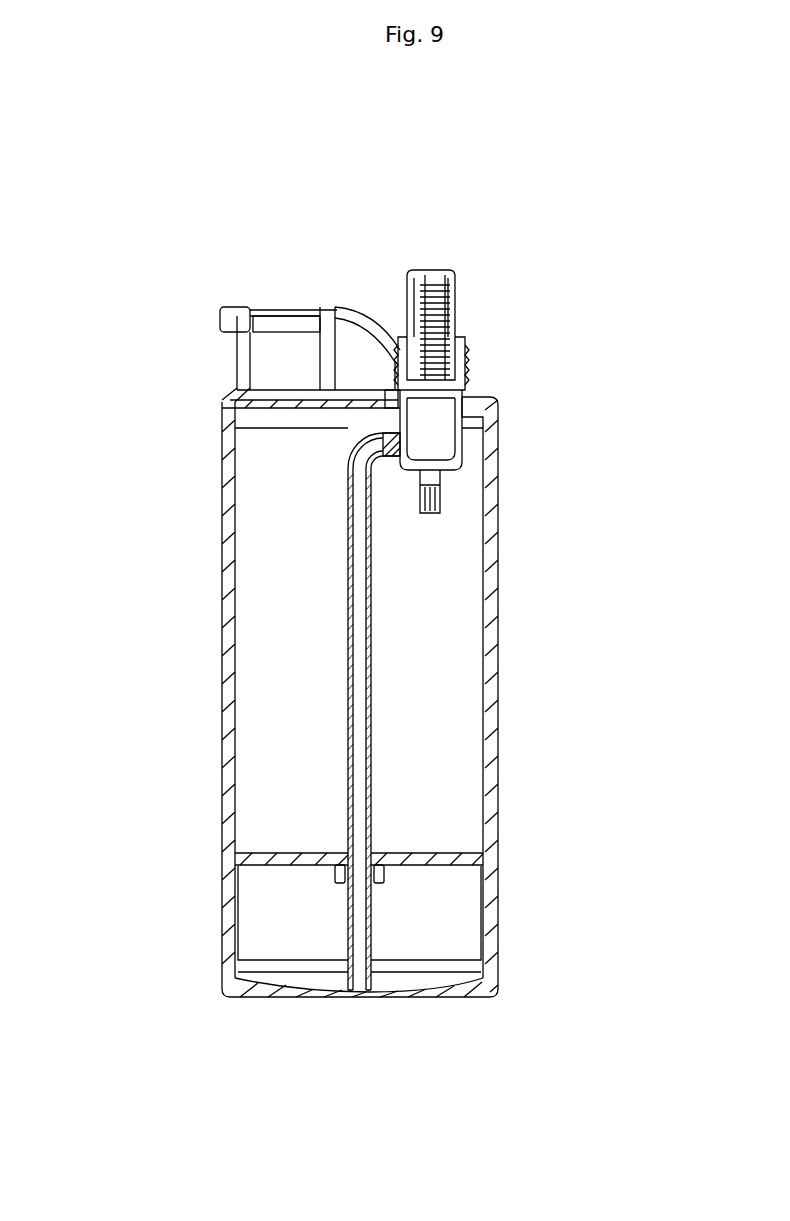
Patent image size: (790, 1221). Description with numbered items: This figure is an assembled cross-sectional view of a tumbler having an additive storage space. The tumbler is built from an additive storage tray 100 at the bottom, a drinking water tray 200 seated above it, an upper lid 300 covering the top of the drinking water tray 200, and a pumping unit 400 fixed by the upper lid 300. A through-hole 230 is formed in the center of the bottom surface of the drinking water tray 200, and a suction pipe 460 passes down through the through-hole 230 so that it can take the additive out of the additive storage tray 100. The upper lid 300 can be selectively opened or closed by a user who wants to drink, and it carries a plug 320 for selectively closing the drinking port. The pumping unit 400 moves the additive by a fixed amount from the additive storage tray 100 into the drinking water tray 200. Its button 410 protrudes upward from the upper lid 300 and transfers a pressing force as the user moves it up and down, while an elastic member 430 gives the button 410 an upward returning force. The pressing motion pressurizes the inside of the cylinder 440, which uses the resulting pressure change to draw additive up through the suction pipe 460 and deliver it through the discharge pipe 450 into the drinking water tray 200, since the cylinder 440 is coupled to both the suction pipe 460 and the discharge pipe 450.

The additive storage tray 100 is at (497, 972).
The drinking water tray 200 is at (490, 548).
The through-hole 230 is at (375, 852).
The upper lid 300 is at (222, 362).
The plug 320 is at (340, 305).
The pumping unit 400 is at (474, 282).
The button 410 is at (425, 270).
The elastic member 430 is at (455, 310).
The cylinder 440 is at (498, 402).
The discharge pipe 450 is at (450, 492).
The suction pipe 460 is at (358, 770).